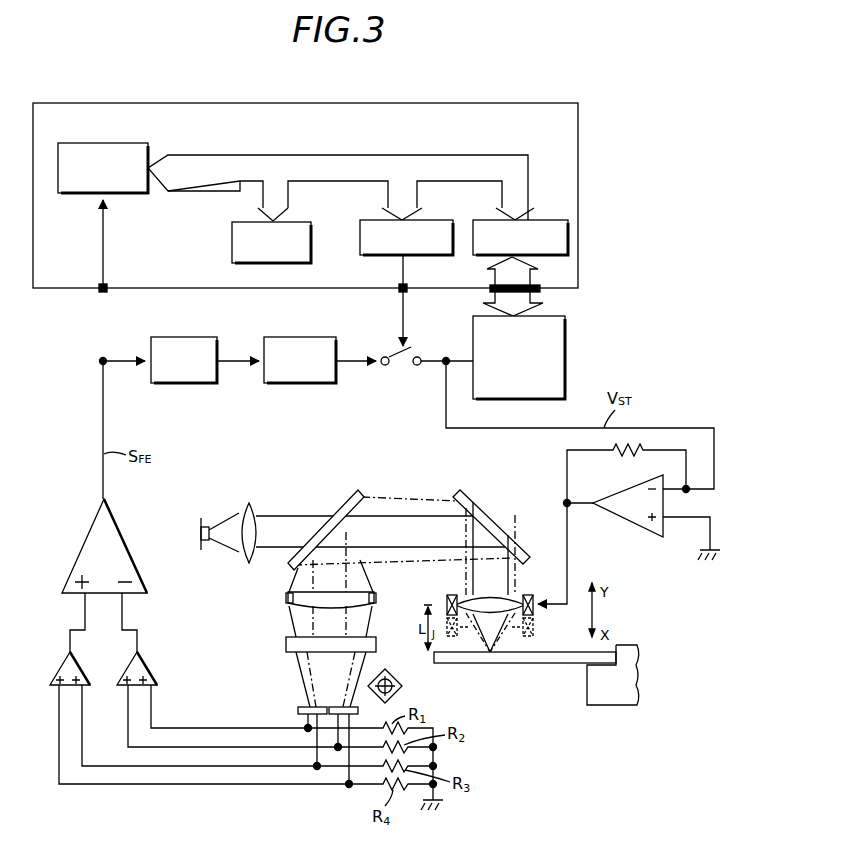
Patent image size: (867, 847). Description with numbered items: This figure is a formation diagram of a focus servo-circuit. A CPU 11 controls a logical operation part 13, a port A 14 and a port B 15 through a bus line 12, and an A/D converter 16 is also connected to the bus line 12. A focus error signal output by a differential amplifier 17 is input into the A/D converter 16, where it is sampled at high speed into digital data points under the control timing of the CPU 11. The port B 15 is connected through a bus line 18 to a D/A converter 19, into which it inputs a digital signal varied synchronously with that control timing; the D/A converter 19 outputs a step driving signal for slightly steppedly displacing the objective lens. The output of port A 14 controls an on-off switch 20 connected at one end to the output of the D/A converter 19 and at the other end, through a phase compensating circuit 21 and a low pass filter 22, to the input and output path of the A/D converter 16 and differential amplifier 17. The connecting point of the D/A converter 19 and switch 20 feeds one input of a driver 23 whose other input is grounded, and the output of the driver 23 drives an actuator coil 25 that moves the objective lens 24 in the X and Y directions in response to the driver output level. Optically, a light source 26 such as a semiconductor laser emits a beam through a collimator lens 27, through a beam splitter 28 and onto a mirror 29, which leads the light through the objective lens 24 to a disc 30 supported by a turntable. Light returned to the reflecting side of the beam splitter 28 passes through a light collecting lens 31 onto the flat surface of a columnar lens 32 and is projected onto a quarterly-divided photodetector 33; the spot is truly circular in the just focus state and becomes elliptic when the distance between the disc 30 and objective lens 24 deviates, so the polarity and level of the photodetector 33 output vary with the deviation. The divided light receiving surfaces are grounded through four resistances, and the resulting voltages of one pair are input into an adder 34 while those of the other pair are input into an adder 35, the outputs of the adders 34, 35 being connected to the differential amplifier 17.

The CPU 11 is at (578, 103).
The bus line 12 is at (528, 155).
The logical operation part 13 is at (232, 228).
The port A 14 is at (360, 224).
The port B 15 is at (473, 228).
The A/D converter 16 is at (72, 195).
The differential amplifier 17 is at (124, 540).
The bus line 18 is at (542, 291).
The D/A converter 19 is at (566, 347).
The on-off switch 20 is at (402, 366).
The phase compensating circuit 21 is at (303, 337).
The low pass filter 22 is at (185, 337).
The driver 23 is at (614, 524).
The objective lens 24 is at (515, 600).
The actuator coil 25 is at (535, 610).
The light source 26 is at (200, 522).
The collimator lens 27 is at (252, 512).
The beam splitter 28 is at (348, 506).
The mirror 29 is at (470, 500).
The disc 30 is at (488, 665).
The light collecting lens 31 is at (286, 598).
The columnar lens 32 is at (286, 645).
The quarterly-divided photodetector 33 is at (298, 709).
The adder 34 is at (150, 667).
The adder 35 is at (60, 665).